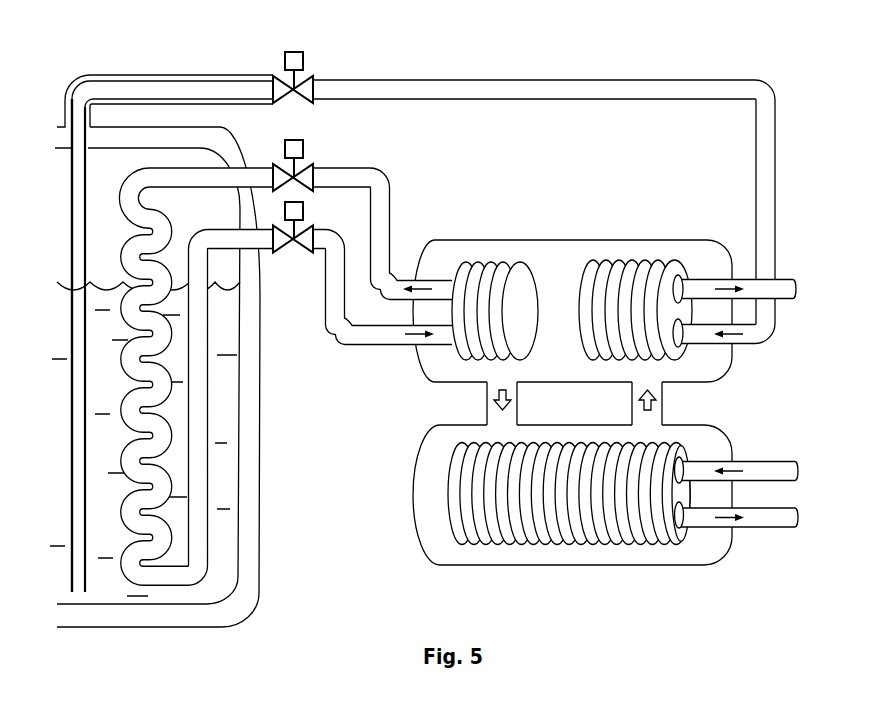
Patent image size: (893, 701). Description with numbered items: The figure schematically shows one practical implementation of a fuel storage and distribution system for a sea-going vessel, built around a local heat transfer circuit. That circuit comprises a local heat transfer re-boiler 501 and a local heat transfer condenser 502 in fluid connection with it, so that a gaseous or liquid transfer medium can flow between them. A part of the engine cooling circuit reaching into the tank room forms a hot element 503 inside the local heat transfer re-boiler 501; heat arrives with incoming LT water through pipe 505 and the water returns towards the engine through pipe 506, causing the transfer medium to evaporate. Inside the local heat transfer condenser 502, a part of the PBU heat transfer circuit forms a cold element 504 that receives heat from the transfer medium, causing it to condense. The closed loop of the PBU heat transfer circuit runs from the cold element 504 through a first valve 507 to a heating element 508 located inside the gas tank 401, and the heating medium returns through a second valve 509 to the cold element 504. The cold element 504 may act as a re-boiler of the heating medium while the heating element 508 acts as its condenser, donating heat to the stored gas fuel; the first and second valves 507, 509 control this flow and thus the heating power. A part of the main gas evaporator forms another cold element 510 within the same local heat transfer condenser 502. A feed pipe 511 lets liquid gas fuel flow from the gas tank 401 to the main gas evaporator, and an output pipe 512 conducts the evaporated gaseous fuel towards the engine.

The gas tank 401 is at (238, 612).
The local heat transfer re-boiler 501 is at (422, 548).
The local heat transfer condenser 502 is at (424, 366).
The hot element 503 is at (463, 543).
The cold element 504 is at (461, 361).
The pipe 505 is at (764, 462).
The pipe 506 is at (757, 527).
The first valve 507 is at (302, 168).
The heating element 508 is at (174, 230).
The second valve 509 is at (280, 255).
The cold element 510 is at (643, 258).
The feed pipe 511 is at (510, 99).
The output pipe 512 is at (780, 280).